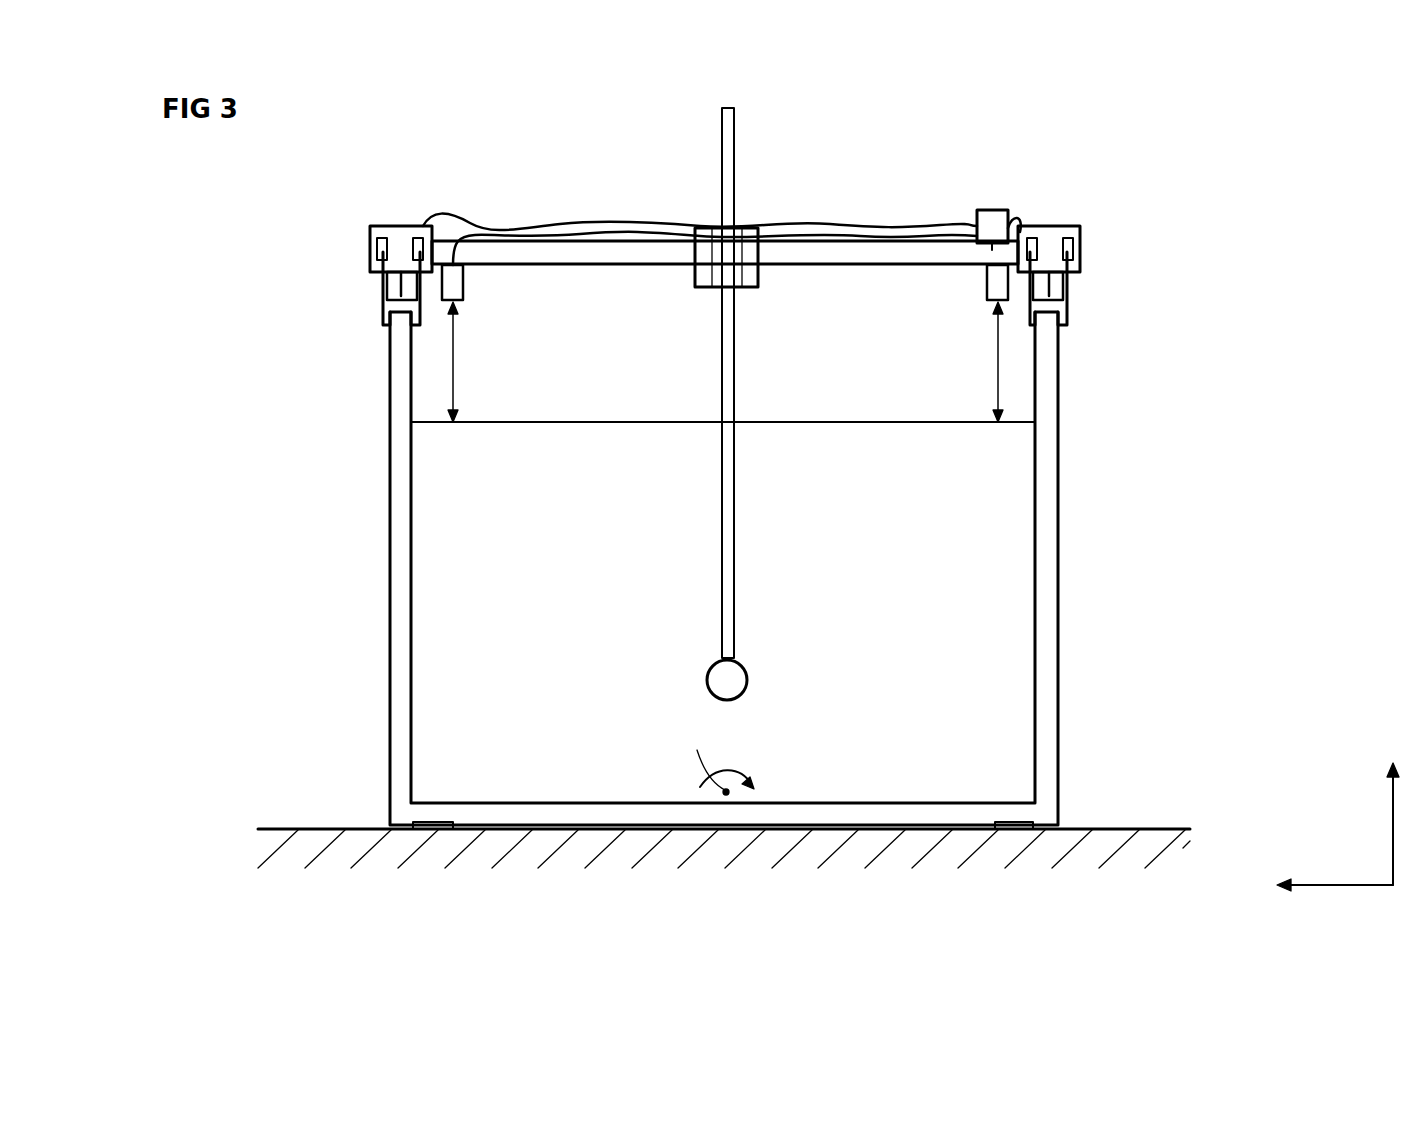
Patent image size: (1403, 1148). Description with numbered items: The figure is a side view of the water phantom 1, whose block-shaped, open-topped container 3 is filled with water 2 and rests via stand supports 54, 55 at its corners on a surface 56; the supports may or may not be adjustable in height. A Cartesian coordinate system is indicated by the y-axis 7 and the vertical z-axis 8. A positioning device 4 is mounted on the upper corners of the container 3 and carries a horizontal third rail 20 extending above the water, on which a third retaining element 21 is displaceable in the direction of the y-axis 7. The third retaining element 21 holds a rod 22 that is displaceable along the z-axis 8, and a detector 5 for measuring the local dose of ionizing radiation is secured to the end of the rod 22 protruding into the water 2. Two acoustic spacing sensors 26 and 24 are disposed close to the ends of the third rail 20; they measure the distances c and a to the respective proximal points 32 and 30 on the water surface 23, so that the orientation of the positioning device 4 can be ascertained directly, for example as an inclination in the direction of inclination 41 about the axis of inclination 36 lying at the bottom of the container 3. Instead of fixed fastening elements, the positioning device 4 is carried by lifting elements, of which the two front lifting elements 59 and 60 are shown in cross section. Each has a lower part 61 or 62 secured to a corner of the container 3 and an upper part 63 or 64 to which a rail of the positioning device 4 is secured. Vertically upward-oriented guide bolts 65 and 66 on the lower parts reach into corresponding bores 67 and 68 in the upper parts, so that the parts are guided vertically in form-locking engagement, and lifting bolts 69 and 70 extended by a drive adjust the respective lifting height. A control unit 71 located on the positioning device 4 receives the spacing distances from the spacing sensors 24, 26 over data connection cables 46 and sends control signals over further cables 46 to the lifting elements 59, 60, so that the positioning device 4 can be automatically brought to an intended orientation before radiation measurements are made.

The water phantom 1 is at (268, 316).
The water 2 is at (437, 573).
The container 3 is at (390, 630).
The positioning device 4 is at (810, 185).
The detector 5 is at (715, 680).
The y-axis 7 is at (1315, 883).
The z-axis 8 is at (1393, 800).
The third rail 20 is at (538, 262).
The third retaining element 21 is at (725, 245).
The rod 22 is at (728, 140).
The water surface 23 is at (561, 418).
The spacing sensor 24 is at (990, 285).
The spacing sensor 26 is at (463, 283).
The proximal point 30 is at (998, 425).
The proximal point 32 is at (453, 425).
The axis of inclination 36 is at (704, 757).
The direction of inclination 41 is at (737, 770).
The data connection cable 46 is at (900, 225).
The stand support 54 is at (428, 829).
The stand support 55 is at (1015, 829).
The surface 56 is at (272, 827).
The lifting element 59 is at (344, 254).
The lifting element 60 is at (1108, 260).
The lower part 61 is at (403, 240).
The lower part 62 is at (1050, 245).
The upper part 63 is at (384, 322).
The upper part 64 is at (1066, 325).
The guide bolt 65 is at (400, 287).
The guide bolt 66 is at (1052, 290).
The bore 67 is at (380, 248).
The bore 68 is at (1072, 249).
The lifting bolt 69 is at (398, 298).
The lifting bolt 70 is at (1052, 300).
The control unit 71 is at (985, 212).